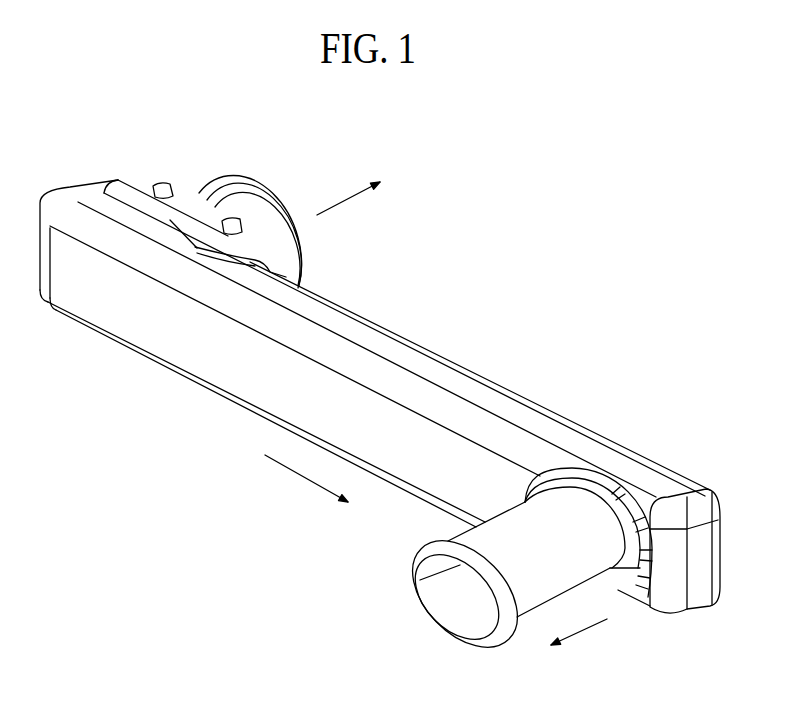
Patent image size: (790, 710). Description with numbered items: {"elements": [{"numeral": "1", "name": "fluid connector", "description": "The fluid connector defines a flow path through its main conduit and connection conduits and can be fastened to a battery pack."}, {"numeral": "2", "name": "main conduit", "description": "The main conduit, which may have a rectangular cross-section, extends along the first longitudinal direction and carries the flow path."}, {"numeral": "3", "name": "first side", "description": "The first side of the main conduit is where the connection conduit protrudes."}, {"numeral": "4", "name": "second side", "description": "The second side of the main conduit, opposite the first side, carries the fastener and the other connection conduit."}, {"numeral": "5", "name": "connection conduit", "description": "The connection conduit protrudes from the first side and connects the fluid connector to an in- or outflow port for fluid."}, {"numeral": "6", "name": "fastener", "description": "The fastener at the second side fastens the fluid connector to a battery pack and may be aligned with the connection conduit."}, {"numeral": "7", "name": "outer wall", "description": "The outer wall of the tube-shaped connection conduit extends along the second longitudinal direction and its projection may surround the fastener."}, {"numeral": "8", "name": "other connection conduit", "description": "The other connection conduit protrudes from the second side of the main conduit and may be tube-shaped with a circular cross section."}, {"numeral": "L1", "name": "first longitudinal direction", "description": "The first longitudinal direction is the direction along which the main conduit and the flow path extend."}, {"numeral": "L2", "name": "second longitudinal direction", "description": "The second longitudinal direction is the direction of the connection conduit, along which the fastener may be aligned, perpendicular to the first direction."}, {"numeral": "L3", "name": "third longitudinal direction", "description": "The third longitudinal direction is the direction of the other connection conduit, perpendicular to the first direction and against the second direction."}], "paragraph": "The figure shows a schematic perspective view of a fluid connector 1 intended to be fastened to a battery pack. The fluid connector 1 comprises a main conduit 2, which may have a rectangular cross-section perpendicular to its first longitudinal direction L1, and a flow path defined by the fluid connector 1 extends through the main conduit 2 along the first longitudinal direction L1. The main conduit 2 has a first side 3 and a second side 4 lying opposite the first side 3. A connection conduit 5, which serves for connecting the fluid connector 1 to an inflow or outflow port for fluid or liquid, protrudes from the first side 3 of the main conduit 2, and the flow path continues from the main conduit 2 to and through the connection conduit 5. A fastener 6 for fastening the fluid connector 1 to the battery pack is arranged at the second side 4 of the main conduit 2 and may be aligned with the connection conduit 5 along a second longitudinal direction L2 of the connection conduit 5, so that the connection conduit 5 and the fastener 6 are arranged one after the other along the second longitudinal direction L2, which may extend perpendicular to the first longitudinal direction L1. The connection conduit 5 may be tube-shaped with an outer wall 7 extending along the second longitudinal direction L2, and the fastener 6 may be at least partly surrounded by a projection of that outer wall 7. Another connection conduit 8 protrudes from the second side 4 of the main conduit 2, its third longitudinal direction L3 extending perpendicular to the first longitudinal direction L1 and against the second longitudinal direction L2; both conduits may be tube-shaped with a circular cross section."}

The vacuum cleaner nozzle 1 is at (520, 265).
The housing 2 is at (281, 425).
The front wall of housing 3 is at (212, 343).
The upper wall of housing 4 is at (533, 393).
The connection tube 5 is at (437, 632).
The end cap 6 is at (688, 464).
The pivot joint collar 7 is at (432, 514).
The wheel 8 is at (194, 175).
The housing length dimension L1 is at (287, 473).
The connection tube length dimension L2 is at (607, 622).
The wheel direction dimension L3 is at (337, 204).